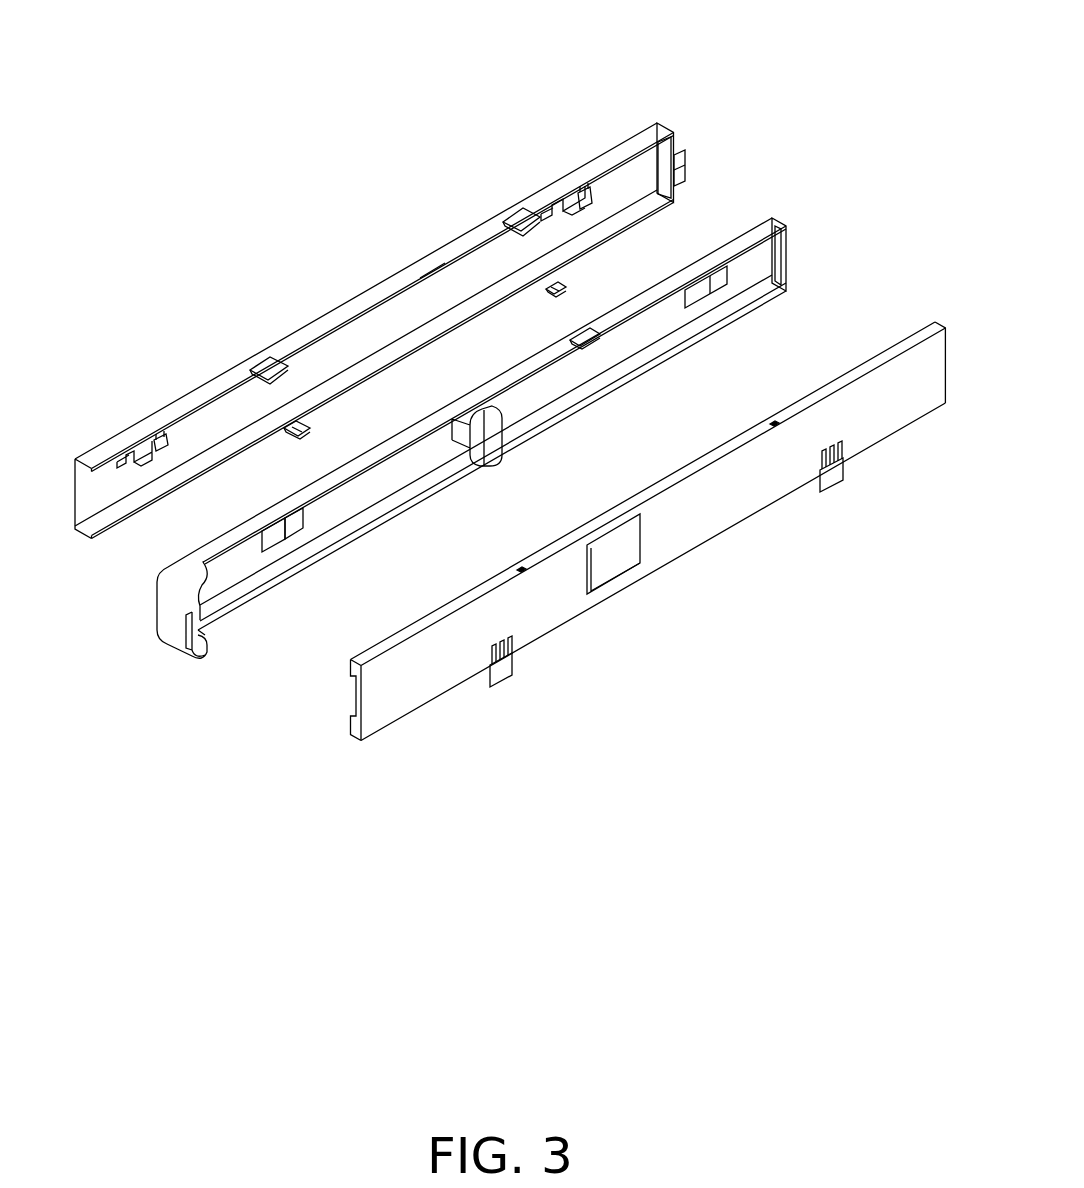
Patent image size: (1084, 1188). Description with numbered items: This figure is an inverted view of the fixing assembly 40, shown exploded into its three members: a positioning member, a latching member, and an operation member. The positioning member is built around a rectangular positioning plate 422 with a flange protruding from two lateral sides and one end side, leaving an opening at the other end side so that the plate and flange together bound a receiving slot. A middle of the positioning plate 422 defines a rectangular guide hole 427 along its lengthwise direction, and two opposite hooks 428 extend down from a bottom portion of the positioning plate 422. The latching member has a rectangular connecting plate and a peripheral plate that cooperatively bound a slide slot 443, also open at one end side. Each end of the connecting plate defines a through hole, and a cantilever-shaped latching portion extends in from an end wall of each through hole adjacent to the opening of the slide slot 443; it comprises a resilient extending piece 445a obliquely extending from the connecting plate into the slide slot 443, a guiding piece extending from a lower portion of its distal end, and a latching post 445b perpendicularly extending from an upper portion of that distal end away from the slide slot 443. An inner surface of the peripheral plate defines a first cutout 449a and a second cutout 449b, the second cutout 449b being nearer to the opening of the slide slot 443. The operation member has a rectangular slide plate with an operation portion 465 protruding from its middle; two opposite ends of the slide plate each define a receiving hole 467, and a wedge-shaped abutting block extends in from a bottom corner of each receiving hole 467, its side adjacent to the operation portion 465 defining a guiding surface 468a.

The fixing assembly 40 is at (380, 90).
The positioning plate 422 is at (725, 508).
The guide hole 427 is at (597, 566).
The hooks 428 is at (838, 478).
The slide slot 443 is at (103, 490).
The extending piece 445a is at (140, 445).
The latching post 445b is at (155, 440).
The first cutout 449a is at (473, 253).
The second cutout 449b is at (433, 273).
The operation portion 465 is at (486, 455).
The receiving hole 467 is at (277, 530).
The guiding surface 468a is at (298, 527).